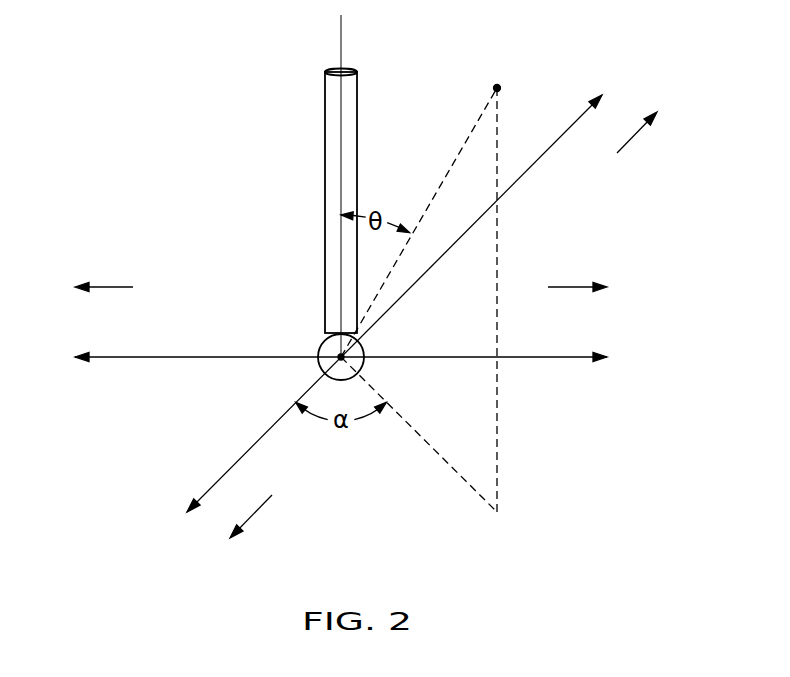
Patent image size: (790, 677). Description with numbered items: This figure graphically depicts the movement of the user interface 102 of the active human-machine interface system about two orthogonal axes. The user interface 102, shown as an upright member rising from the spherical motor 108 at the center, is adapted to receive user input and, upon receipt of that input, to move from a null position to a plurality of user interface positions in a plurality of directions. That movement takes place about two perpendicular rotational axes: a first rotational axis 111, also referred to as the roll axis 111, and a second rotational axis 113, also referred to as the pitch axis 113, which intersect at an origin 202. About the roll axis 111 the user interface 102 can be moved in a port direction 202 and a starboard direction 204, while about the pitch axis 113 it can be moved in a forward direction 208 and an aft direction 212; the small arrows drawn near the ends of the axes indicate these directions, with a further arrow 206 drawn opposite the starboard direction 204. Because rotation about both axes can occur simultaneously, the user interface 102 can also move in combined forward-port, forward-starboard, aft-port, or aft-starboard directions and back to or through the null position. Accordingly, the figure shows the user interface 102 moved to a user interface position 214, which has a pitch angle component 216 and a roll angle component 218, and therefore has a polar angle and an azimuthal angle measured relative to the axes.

The user interface 102 is at (325, 132).
The spherical motor 108 is at (325, 343).
The first rotational axis 111 is at (540, 160).
The second rotational axis 113 is at (552, 360).
The origin 202 is at (324, 352).
The starboard direction 204 is at (110, 287).
The second direction along second axis 206 is at (572, 287).
The forward direction 208 is at (637, 132).
The aft direction 212 is at (255, 515).
The user interface position 214 is at (498, 85).
The pitch angle component 216 is at (455, 158).
The roll angle component 218 is at (442, 462).